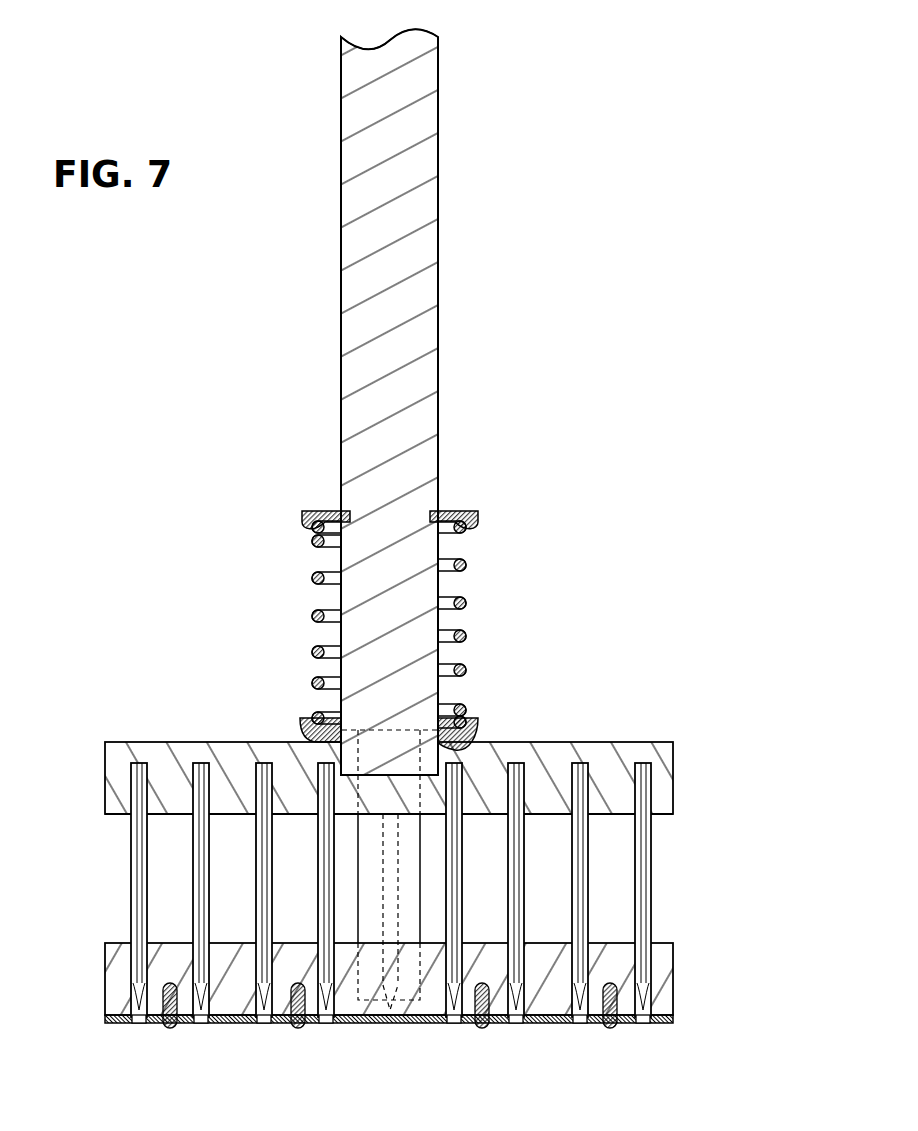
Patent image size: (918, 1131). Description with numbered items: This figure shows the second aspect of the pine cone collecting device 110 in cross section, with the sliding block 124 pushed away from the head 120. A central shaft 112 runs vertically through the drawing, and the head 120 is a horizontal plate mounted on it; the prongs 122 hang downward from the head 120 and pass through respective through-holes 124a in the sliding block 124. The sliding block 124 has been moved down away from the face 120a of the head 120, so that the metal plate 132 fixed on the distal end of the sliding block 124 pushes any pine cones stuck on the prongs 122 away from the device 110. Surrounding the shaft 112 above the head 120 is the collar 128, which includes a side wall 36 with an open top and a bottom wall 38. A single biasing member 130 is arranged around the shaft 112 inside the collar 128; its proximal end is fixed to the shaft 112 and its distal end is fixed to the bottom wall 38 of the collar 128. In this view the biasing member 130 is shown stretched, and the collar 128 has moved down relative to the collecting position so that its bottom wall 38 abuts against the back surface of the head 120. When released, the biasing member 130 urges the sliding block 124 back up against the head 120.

The device 110 is at (615, 128).
The shaft 112 is at (452, 143).
The side wall 36 is at (472, 514).
The bottom wall 38 is at (466, 750).
The collar 128 is at (466, 606).
The biasing member 130 is at (460, 578).
The head 120 is at (688, 764).
The face 120a is at (660, 814).
The prongs 122 is at (664, 875).
The sliding block 124 is at (684, 970).
The through-holes 124a is at (673, 998).
The metal plate 132 is at (673, 1022).